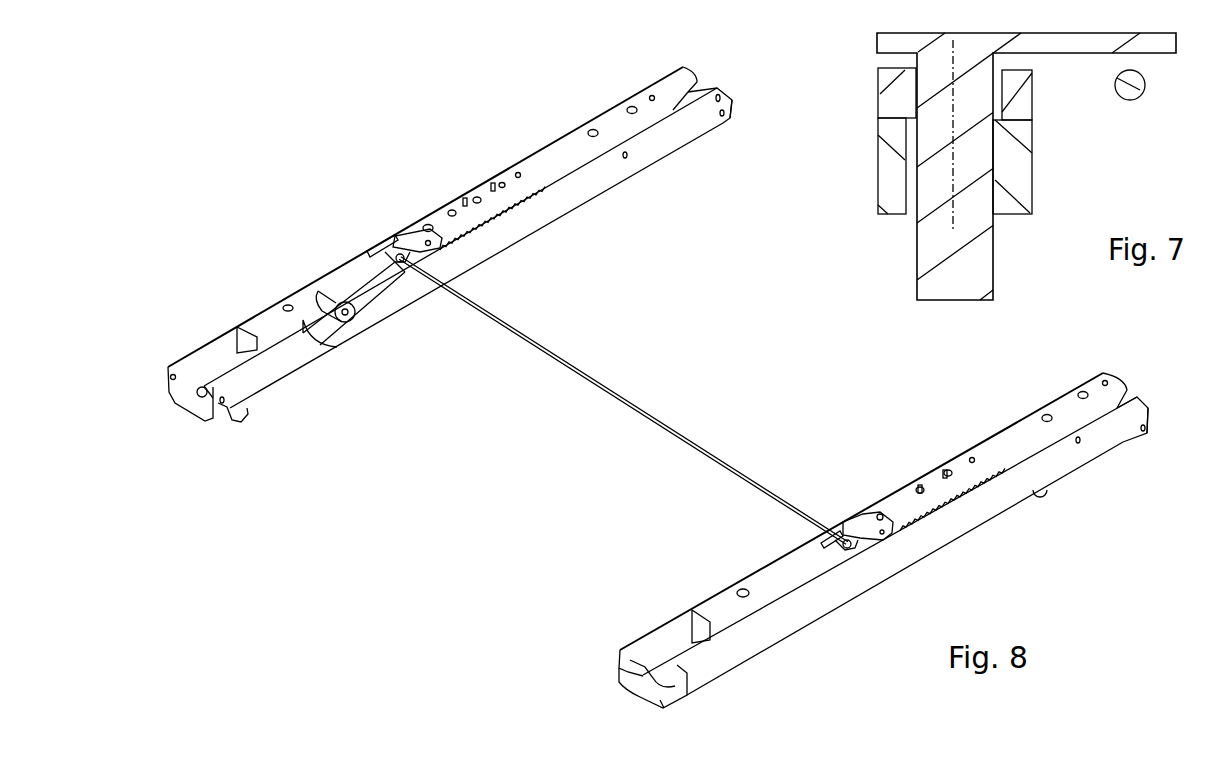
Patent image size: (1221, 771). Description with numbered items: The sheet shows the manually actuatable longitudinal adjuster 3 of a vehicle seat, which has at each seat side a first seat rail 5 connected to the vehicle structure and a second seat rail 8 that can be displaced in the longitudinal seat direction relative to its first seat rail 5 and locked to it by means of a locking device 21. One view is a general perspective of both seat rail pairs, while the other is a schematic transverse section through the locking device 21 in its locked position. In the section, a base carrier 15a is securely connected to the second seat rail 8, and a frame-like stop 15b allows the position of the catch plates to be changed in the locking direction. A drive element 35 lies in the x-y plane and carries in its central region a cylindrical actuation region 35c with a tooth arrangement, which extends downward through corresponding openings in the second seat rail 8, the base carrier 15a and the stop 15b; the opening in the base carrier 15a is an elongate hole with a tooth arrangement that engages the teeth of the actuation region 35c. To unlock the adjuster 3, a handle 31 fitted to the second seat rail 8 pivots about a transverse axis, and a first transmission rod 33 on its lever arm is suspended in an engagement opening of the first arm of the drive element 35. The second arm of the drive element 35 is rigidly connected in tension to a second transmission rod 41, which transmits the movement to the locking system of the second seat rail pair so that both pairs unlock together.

In FIG. 8, the longitudinal adjuster 3 is at (658, 387).
In FIG. 8, the first seat rail 5 is at (202, 378).
In FIG. 8, the second seat rail 8 is at (277, 323).
In FIG. 7, the base carrier 15a is at (900, 92).
In FIG. 7, the stop 15b is at (890, 160).
In FIG. 8, the locking device 21 is at (658, 387).
In FIG. 8, the handle 31 is at (267, 400).
In FIG. 8, the first transmission rod 33 is at (370, 327).
In FIG. 7, the drive element 35 is at (940, 53).
In FIG. 8, the drive element 35 is at (418, 240).
In FIG. 7, the actuation region 35c is at (953, 180).
In FIG. 8, the second transmission rod 41 is at (652, 417).